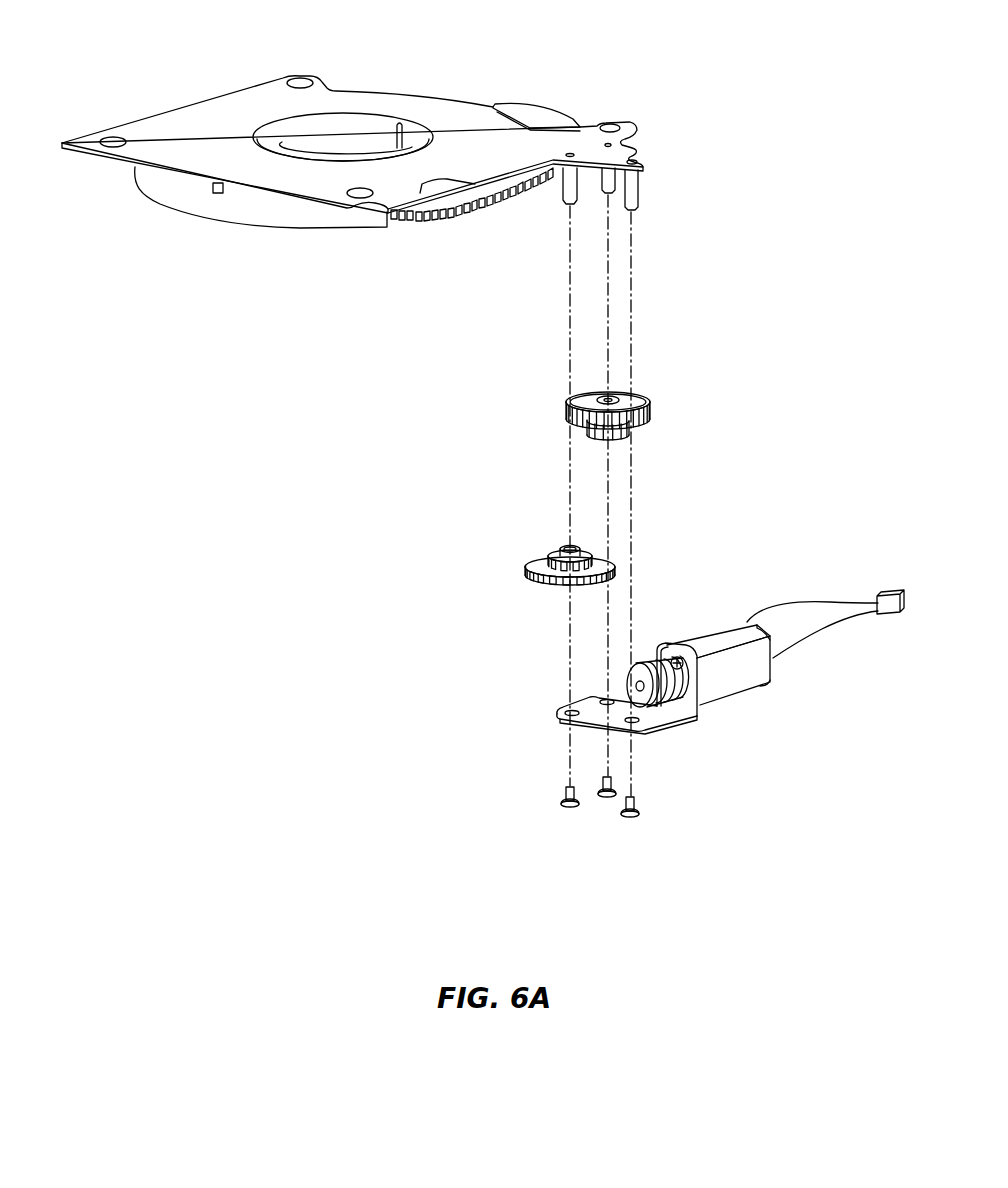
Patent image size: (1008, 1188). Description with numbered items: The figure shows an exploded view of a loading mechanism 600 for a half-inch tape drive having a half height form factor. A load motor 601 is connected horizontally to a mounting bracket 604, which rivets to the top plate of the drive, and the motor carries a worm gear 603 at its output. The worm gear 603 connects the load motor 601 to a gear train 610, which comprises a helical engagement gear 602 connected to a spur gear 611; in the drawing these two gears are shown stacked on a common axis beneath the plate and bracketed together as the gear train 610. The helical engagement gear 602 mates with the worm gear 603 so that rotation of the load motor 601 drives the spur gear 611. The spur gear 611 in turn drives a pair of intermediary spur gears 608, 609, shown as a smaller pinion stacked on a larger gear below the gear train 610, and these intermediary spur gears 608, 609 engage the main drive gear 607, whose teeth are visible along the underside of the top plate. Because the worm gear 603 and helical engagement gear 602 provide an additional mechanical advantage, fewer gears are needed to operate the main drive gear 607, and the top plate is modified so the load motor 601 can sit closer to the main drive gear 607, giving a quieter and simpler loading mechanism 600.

The loading mechanism 600 is at (613, 38).
The load motor 601 is at (740, 681).
The helical engagement gear 602 is at (649, 398).
The worm gear 603 is at (649, 662).
The mounting bracket 604 is at (670, 721).
The main drive gear 607 is at (436, 221).
The intermediary spur gear 608 is at (556, 551).
The intermediary spur gear 609 is at (526, 565).
The gear train 610 is at (738, 393).
The spur gear 611 is at (629, 433).